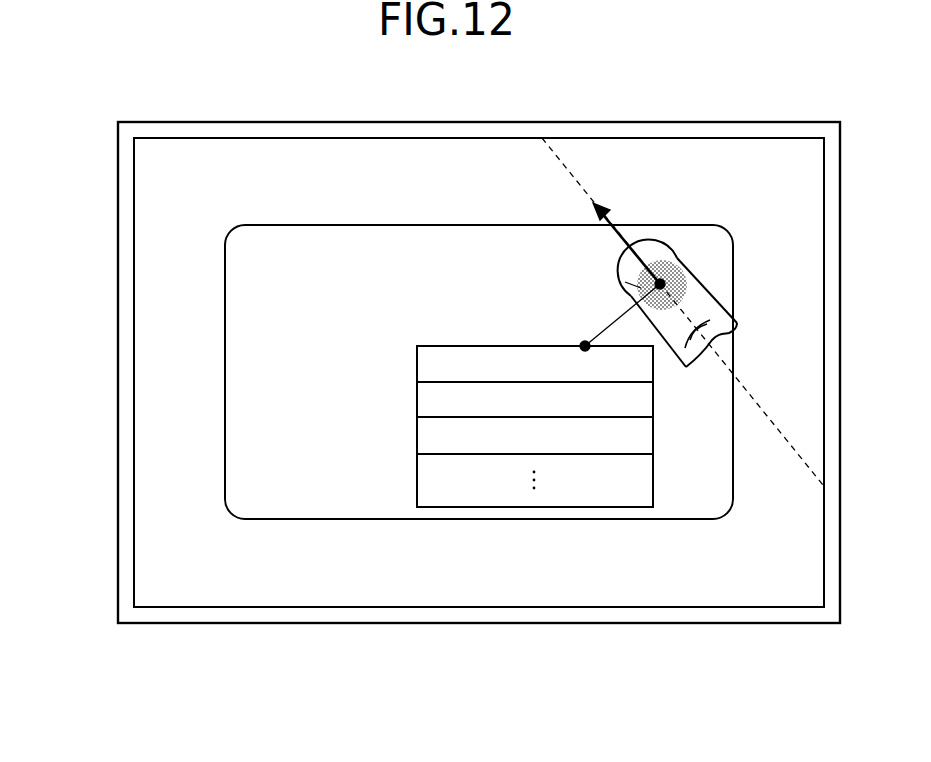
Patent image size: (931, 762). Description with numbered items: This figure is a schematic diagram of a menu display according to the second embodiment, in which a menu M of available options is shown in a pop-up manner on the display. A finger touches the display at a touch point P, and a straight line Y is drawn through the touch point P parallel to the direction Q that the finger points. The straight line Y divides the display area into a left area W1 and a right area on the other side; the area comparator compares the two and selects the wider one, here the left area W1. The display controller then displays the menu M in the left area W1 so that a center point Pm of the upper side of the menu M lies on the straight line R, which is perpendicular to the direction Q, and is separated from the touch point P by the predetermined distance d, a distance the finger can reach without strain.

The left area W1 is at (157, 363).
The menu M is at (417, 362).
The straight line Y is at (580, 185).
The direction that a finger points Q is at (628, 243).
The touch point P is at (660, 280).
The straight line R is at (584, 345).
The predetermined distance d is at (635, 280).
The center point of the upper side of the menu Pm is at (584, 346).